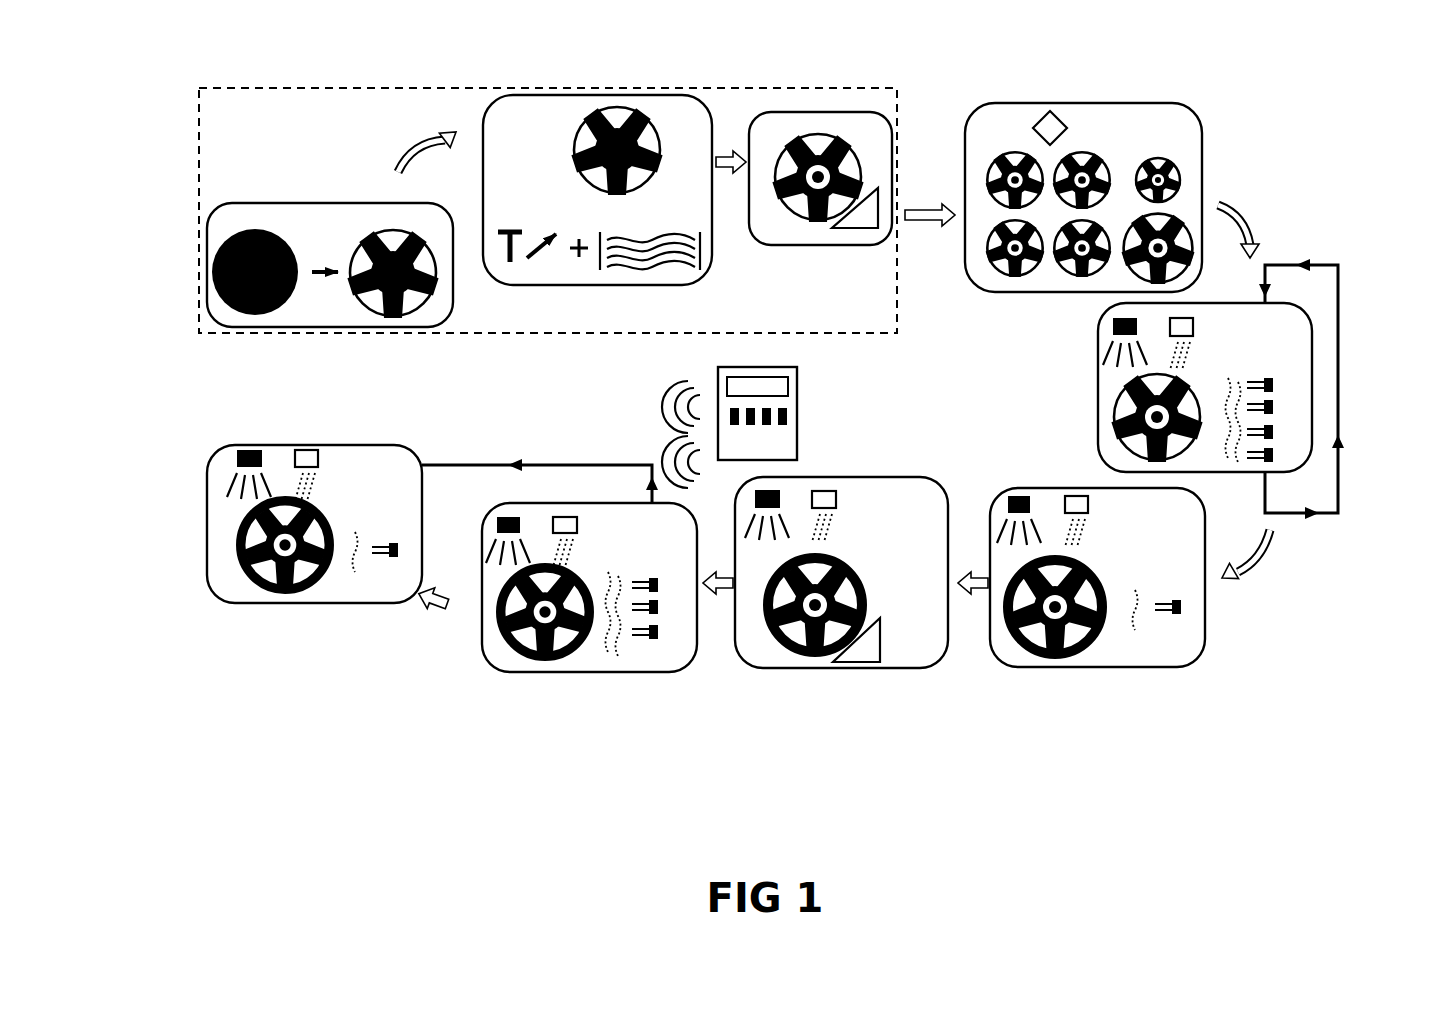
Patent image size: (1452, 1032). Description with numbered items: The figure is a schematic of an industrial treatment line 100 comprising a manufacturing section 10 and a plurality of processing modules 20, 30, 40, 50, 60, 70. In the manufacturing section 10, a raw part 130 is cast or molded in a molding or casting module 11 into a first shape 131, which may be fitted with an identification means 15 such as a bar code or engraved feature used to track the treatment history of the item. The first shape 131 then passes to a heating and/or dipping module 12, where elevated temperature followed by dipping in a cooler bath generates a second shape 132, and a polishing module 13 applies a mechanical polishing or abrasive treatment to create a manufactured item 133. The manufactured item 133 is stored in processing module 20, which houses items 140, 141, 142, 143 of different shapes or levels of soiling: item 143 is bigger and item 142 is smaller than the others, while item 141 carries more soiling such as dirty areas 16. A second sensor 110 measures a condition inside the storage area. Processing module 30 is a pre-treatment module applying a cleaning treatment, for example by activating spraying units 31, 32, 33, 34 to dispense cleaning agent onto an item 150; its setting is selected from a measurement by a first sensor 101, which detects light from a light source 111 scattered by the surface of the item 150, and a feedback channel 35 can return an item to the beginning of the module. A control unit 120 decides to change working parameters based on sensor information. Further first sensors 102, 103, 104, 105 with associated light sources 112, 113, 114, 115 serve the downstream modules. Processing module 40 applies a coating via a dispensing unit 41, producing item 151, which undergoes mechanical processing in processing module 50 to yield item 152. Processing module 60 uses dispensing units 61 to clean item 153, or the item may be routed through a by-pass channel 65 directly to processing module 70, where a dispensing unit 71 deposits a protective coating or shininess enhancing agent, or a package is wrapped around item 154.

The manufacturing section 10 is at (188, 195).
The molding or casting module 11 is at (284, 259).
The heating and/or dipping module 12 is at (539, 208).
The polishing module 13 is at (846, 194).
The identification means 15 is at (398, 245).
The dirty areas 16 is at (608, 282).
The processing module 20 is at (1218, 192).
The processing module 30 is at (1219, 371).
The spraying unit 31 is at (1278, 388).
The spraying unit 32 is at (1278, 412).
The spraying unit 33 is at (1278, 435).
The spraying unit 34 is at (1278, 458).
The feedback channel 35 is at (1348, 312).
The processing module 40 is at (1145, 601).
The dispensing unit 41 is at (1178, 625).
The processing module 50 is at (841, 597).
The processing module 60 is at (535, 582).
The dispensing units 61 is at (651, 645).
The by-pass channel 65 is at (478, 460).
The processing module 70 is at (268, 554).
The dispensing unit 71 is at (385, 575).
The industrial treatment line 100 is at (1300, 712).
The first sensor 101 is at (1197, 318).
The first sensor 102 is at (1095, 512).
The first sensor 103 is at (845, 500).
The first sensor 104 is at (568, 512).
The first sensor 105 is at (325, 455).
The second sensor 110 is at (1091, 185).
The light source 111 is at (1107, 331).
The light source 112 is at (1008, 500).
The light source 113 is at (790, 490).
The light source 114 is at (488, 532).
The light source 115 is at (228, 465).
The control unit 120 is at (805, 405).
The raw part 130 is at (230, 310).
The first shape 131 is at (355, 303).
The second shape 132 is at (583, 133).
The manufactured item 133 is at (790, 225).
The item 140 is at (1000, 265).
The item 141 is at (1070, 270).
The item 142 is at (1163, 150).
The item 143 is at (1186, 222).
The item 150 is at (1130, 432).
The item 151 is at (1015, 650).
The item 152 is at (780, 655).
The item 153 is at (510, 655).
The item 154 is at (277, 602).